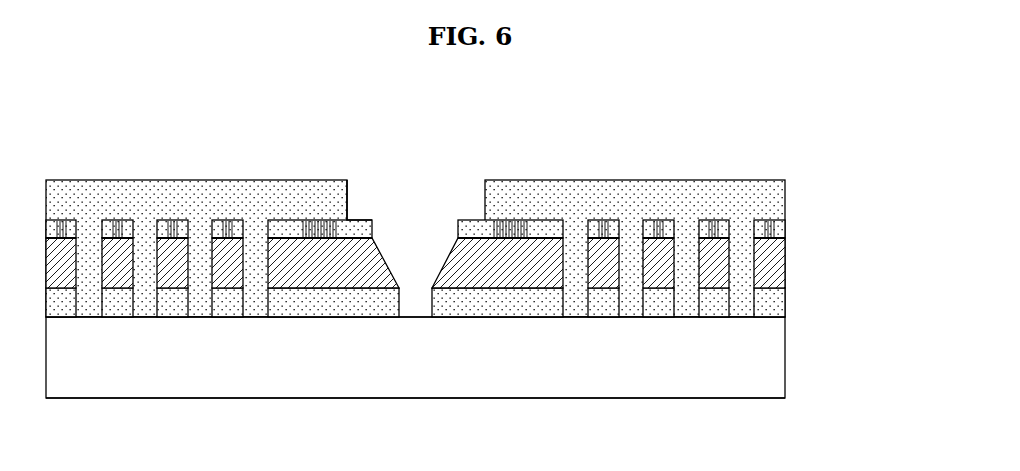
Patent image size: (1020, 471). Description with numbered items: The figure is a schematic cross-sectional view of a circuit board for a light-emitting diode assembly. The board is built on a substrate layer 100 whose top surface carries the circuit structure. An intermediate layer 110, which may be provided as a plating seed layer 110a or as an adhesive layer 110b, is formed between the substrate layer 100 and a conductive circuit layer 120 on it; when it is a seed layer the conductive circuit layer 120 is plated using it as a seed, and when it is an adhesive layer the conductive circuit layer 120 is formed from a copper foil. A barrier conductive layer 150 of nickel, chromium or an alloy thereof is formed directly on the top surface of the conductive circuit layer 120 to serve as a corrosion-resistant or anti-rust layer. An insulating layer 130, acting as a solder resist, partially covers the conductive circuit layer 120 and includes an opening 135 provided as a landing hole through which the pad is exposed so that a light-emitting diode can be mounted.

The substrate layer 100 is at (780, 360).
The intermediate layer 110 is at (330, 307).
The intermediate layer (plating seed layer) 110a is at (750, 322).
The intermediate layer (adhesive layer) 110b is at (750, 404).
The conductive circuit layer 120 is at (505, 278).
The insulating layer 130 is at (200, 188).
The opening 135 is at (354, 200).
The barrier conductive layer 150 is at (527, 232).